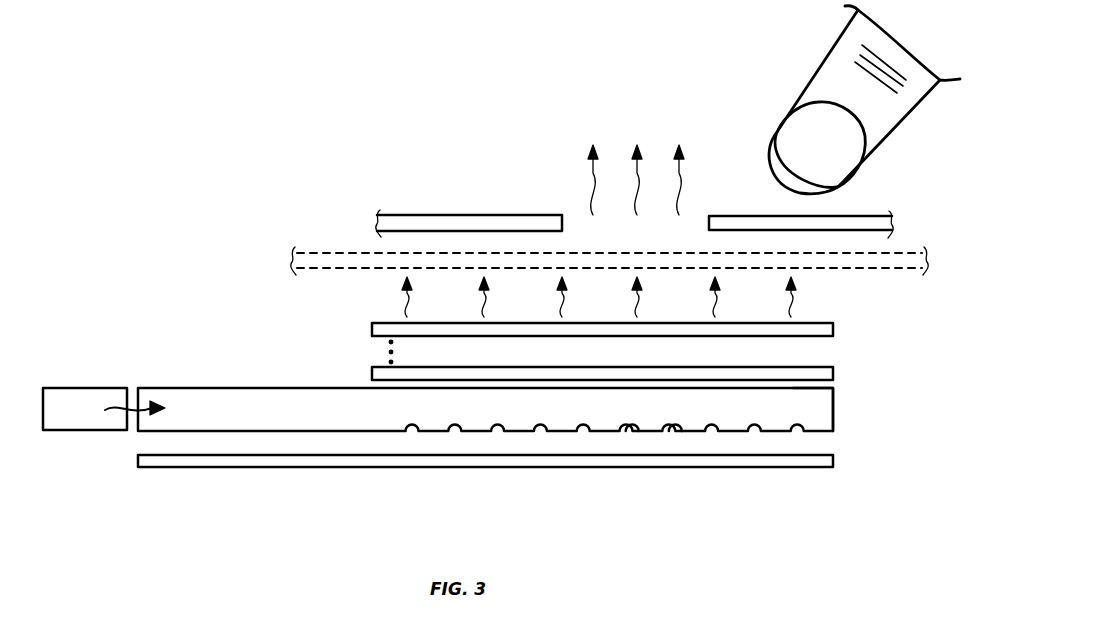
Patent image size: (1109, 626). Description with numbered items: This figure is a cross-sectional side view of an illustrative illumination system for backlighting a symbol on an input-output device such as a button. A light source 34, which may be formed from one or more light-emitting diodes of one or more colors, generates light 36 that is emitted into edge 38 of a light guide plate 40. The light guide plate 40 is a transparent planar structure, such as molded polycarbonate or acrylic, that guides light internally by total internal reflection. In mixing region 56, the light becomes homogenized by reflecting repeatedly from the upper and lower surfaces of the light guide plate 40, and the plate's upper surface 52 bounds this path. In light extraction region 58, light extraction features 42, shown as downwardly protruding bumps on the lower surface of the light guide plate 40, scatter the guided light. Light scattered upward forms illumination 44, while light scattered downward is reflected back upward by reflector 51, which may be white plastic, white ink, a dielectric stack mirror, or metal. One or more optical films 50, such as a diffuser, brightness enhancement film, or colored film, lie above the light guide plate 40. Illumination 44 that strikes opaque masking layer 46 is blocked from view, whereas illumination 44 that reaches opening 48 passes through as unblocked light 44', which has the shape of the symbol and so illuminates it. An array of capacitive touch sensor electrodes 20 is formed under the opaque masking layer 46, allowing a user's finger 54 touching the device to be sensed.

The capacitive touch sensor electrodes 20 is at (888, 272).
The light source 34 is at (88, 432).
The light 36 is at (118, 403).
The edge of light guide 38 is at (145, 392).
The light guide plate 40 is at (230, 390).
The light extraction features 42 is at (630, 433).
The illumination 44 is at (599, 297).
The unblocked light 44' is at (636, 159).
The opaque masking layer 46 is at (870, 215).
The opening 48 is at (560, 194).
The optical films 50 is at (845, 323).
The reflector 51 is at (836, 460).
The light guide upper surface 52 is at (793, 392).
The finger 54 is at (903, 122).
The mixing region 56 is at (138, 488).
The light extraction region 58 is at (833, 488).